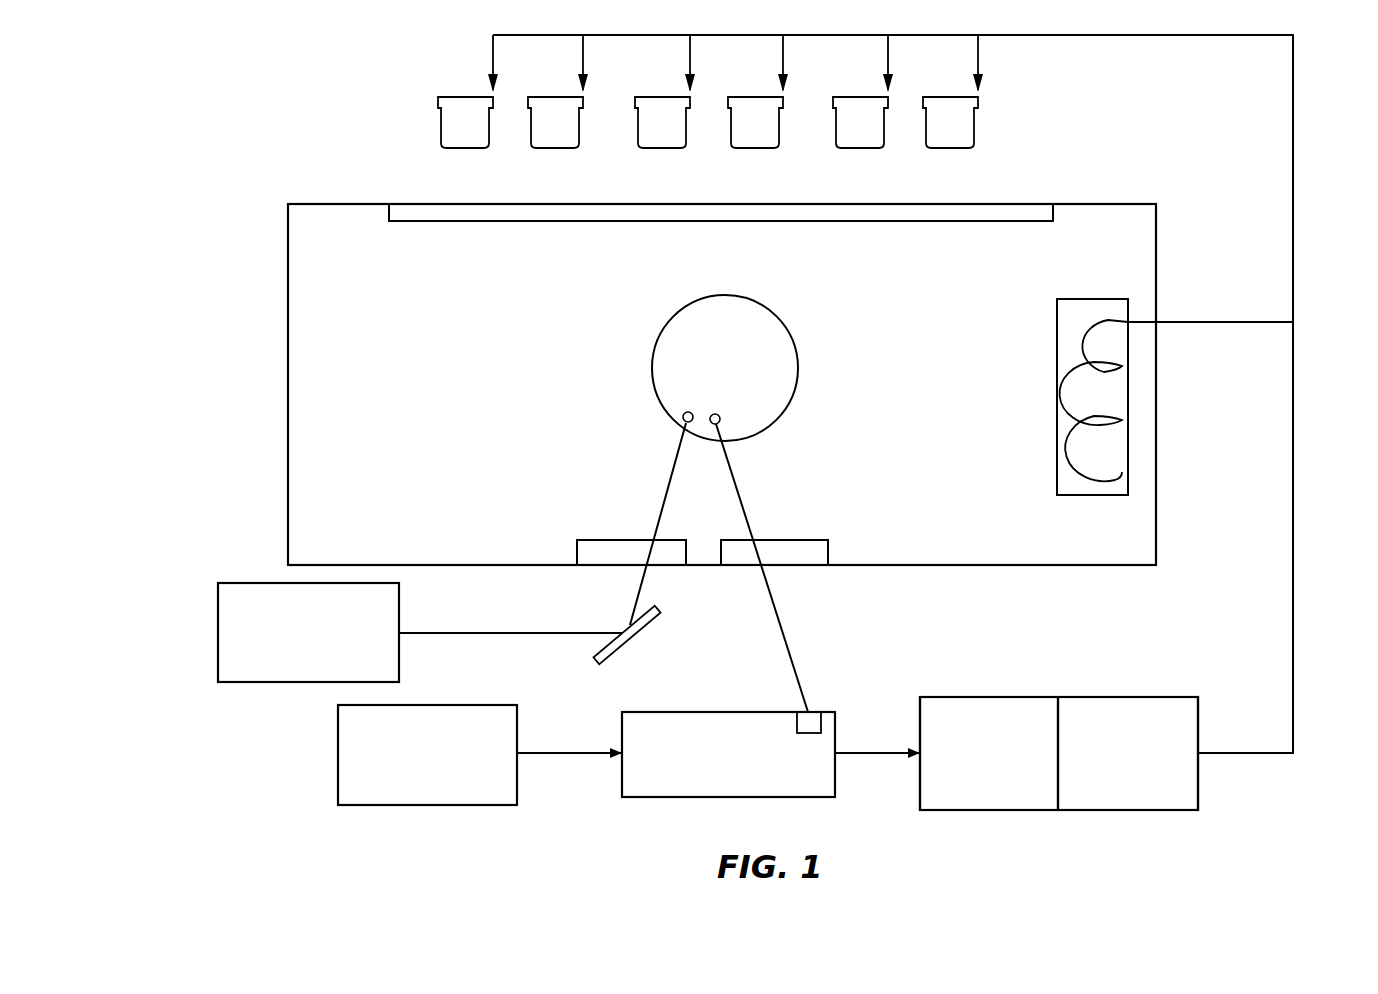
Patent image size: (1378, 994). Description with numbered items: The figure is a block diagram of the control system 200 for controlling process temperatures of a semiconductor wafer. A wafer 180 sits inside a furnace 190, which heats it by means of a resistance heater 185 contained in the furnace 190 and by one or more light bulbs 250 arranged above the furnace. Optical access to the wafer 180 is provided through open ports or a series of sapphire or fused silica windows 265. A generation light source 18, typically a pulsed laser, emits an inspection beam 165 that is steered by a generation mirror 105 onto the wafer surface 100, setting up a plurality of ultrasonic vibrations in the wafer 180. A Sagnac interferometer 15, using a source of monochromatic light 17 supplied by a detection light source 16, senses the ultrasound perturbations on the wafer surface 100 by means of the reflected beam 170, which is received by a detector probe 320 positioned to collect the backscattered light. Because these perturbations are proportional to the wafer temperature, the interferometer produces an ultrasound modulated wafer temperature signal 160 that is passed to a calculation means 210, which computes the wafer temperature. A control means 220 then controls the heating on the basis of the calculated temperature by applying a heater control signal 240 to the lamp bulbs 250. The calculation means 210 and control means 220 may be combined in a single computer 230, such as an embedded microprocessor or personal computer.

The Sagnac interferometer 15 is at (680, 797).
The detection light source 16 is at (398, 807).
The source of monochromatic light 17 is at (565, 756).
The generation light source 18 is at (218, 637).
The wafer surface 100 is at (701, 381).
The generation mirror 105 is at (640, 636).
The ultrasound modulated wafer temperature signal 160 is at (858, 757).
The inspection beam 165 is at (666, 492).
The reflected beam 170 is at (745, 501).
The wafer 180 is at (797, 356).
The resistance heater 185 is at (1068, 497).
The furnace 190 is at (288, 463).
The control system 200 is at (195, 727).
The calculation means 210 is at (995, 812).
The control means 220 is at (1118, 812).
The computer 230 is at (1081, 726).
The heater control signal 240 is at (1293, 687).
The light bulbs 250 is at (470, 149).
The windows 265 is at (1011, 222).
The detector probe 320 is at (813, 718).